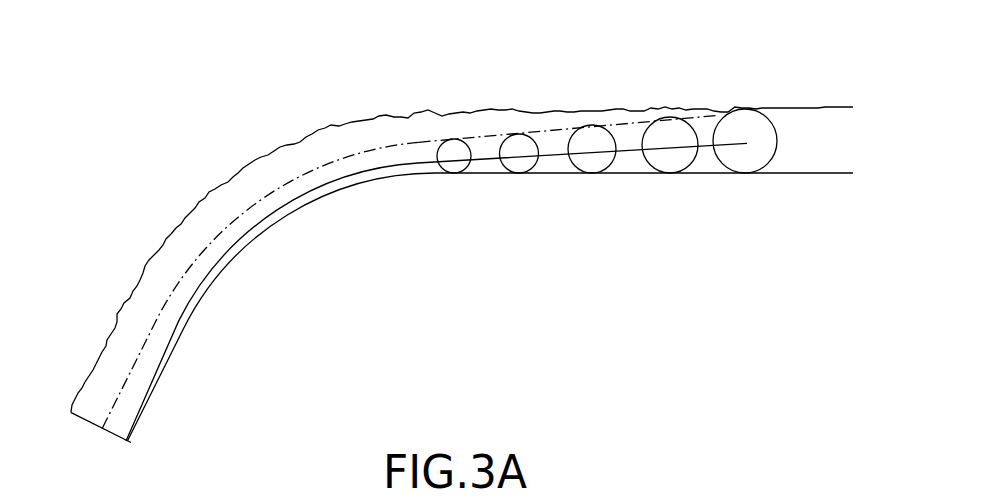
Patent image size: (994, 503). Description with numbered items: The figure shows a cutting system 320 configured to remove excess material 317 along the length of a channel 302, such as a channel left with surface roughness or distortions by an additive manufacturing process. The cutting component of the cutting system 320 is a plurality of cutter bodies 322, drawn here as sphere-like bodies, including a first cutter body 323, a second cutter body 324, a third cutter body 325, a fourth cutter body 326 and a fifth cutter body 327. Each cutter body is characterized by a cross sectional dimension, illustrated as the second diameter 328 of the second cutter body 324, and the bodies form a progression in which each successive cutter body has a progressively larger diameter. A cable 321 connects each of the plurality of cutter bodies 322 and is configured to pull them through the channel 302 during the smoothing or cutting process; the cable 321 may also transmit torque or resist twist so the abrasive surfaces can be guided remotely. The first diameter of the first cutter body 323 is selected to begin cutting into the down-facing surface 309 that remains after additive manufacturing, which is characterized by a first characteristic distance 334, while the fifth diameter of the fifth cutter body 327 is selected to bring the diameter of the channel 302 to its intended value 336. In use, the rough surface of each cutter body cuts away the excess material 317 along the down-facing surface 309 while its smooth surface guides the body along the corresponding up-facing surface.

The channel 302 is at (132, 254).
The excess material 317 is at (225, 205).
The down-facing surface 309 is at (277, 192).
The first characteristic distance 334 is at (293, 220).
The cable 321 is at (102, 475).
The cutting system 320 is at (597, 70).
The second diameter 328 is at (523, 133).
The plurality of cutter bodies 322 is at (683, 92).
The first cutter body 323 is at (453, 163).
The second cutter body 324 is at (525, 163).
The third cutter body 325 is at (603, 160).
The fourth cutter body 326 is at (678, 162).
The fifth cutter body 327 is at (748, 162).
The intended value 336 is at (815, 203).